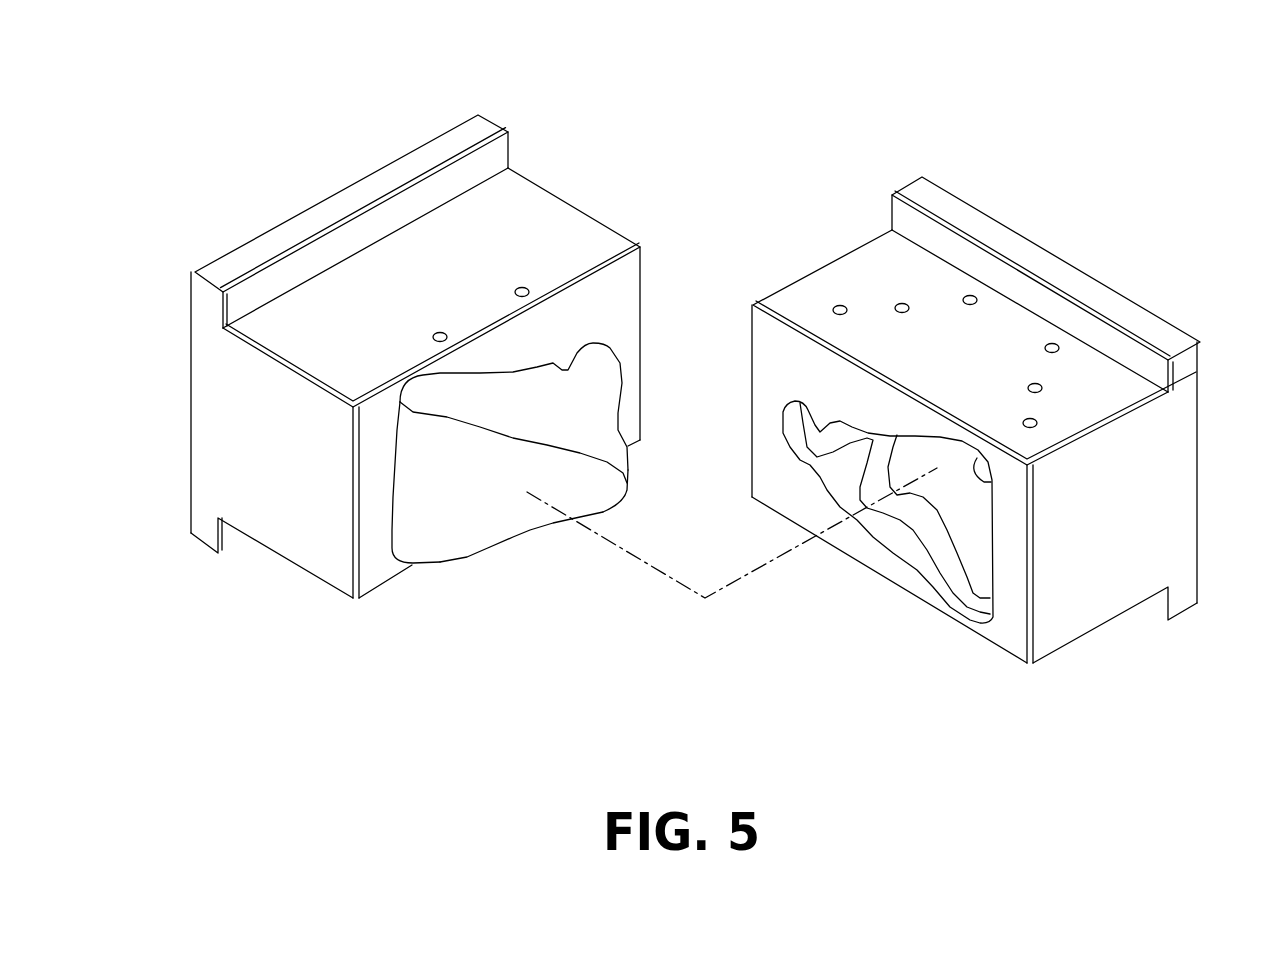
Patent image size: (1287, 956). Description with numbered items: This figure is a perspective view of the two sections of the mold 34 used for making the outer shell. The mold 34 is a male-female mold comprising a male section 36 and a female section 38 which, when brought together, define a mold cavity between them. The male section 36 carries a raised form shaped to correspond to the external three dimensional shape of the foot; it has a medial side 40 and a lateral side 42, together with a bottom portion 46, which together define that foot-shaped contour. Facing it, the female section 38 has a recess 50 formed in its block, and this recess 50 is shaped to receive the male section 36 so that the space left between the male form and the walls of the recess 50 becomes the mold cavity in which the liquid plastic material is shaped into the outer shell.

The mold 34 is at (967, 90).
The male section 36 is at (473, 402).
The female section 38 is at (1093, 388).
The medial side 40 is at (547, 405).
The lateral side 42 is at (518, 533).
The bottom portion 46 is at (490, 492).
The recess 50 is at (973, 538).